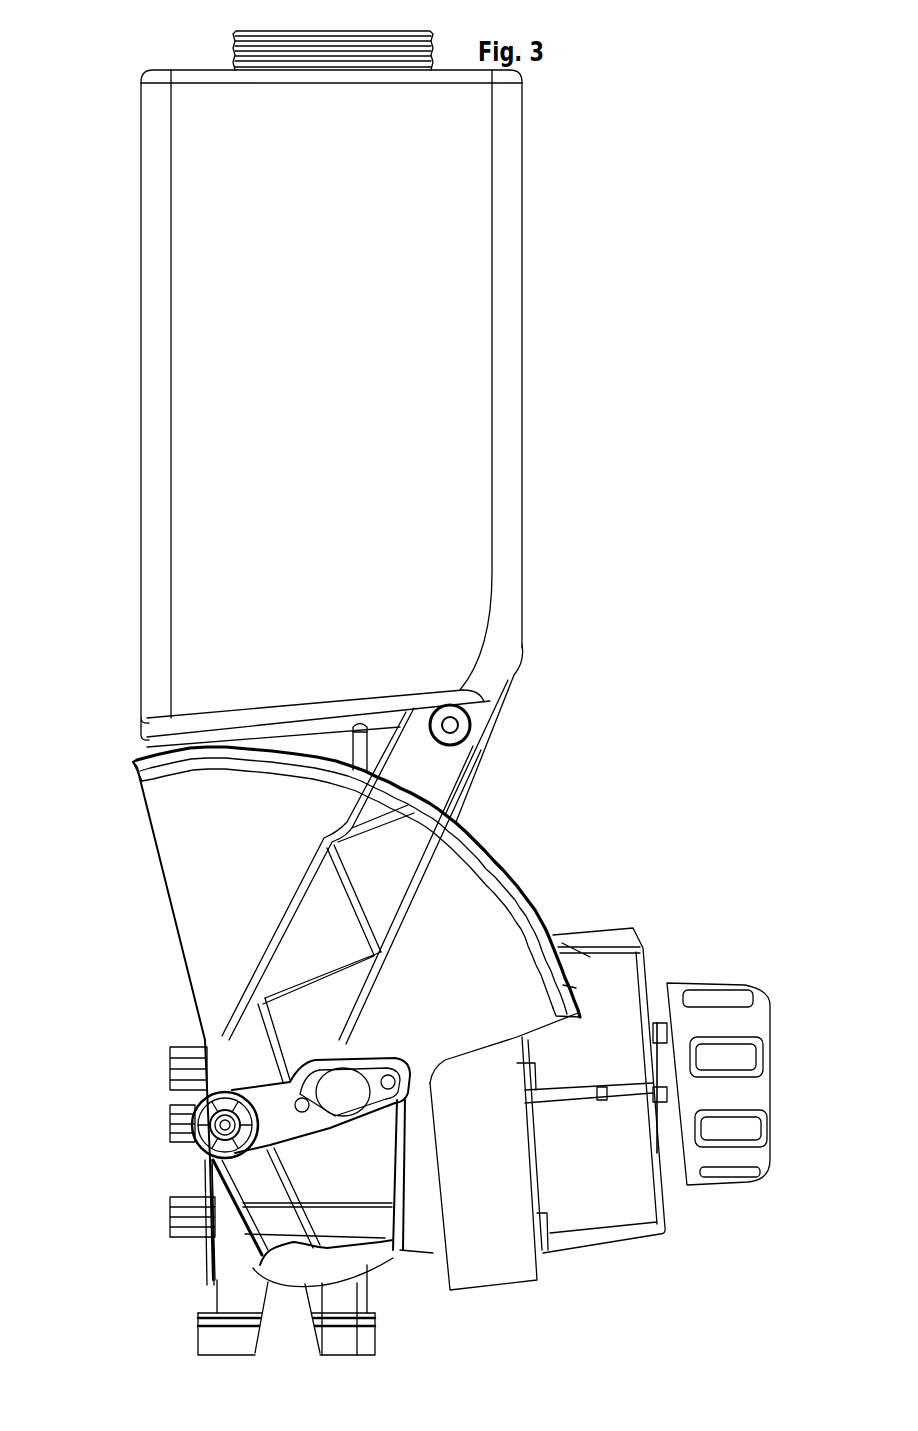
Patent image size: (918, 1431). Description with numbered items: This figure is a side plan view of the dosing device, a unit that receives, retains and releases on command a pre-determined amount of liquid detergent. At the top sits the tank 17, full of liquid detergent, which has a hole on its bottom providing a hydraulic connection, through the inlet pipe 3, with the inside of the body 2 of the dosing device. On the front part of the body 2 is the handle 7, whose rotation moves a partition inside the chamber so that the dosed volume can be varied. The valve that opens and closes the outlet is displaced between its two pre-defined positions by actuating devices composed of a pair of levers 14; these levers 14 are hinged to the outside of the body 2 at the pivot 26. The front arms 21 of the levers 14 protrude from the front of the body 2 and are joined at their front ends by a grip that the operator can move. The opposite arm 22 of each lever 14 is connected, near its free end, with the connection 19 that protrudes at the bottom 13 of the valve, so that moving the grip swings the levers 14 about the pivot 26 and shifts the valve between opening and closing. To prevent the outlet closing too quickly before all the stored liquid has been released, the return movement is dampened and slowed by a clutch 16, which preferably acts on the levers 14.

The body 2 is at (422, 1250).
The inlet pipe 3 is at (360, 750).
The handle 7 is at (768, 1085).
The bottom of the valve 13 is at (360, 1343).
The levers 14 is at (280, 920).
The clutch 16 is at (343, 1098).
The tank 17 is at (448, 378).
The connection 19 is at (282, 1297).
The front arms 21 is at (442, 790).
The arm 22 is at (243, 1225).
The pivot 26 is at (212, 1133).